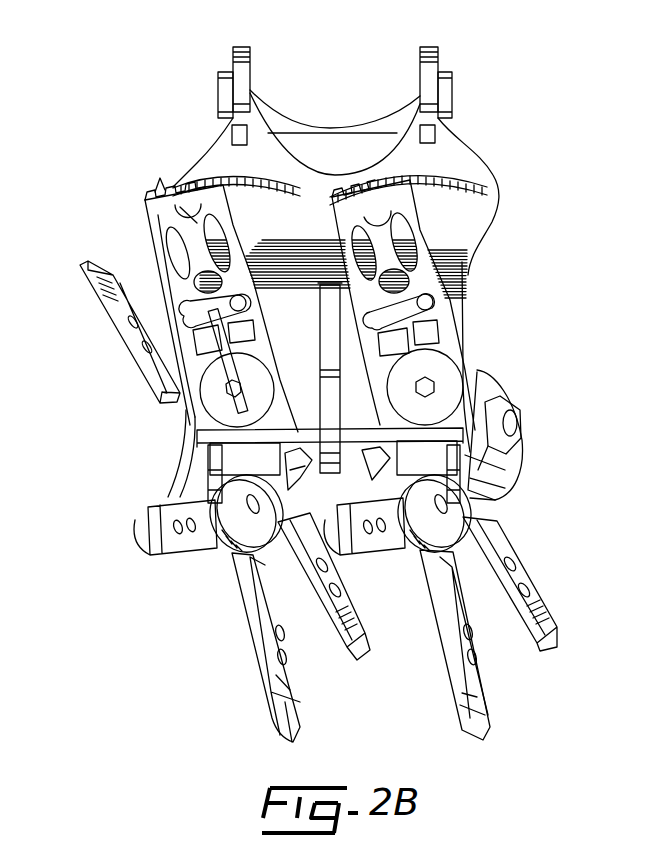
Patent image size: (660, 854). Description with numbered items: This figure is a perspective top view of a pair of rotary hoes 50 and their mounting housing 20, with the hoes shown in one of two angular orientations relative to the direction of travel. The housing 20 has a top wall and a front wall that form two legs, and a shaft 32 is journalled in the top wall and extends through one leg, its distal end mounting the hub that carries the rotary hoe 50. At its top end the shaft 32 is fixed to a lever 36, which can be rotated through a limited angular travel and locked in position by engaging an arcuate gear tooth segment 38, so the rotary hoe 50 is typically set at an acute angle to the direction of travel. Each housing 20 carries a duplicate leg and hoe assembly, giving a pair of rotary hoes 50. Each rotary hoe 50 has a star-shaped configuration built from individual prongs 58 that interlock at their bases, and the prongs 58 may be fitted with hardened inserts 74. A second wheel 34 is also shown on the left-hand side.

The housing 20 is at (468, 263).
The shaft 32 is at (428, 385).
The adjustment wheel 34 is at (233, 392).
The lever 36 is at (163, 273).
The arcuate gear tooth segment 38 is at (223, 180).
The rotary hoe 50 is at (236, 603).
The prongs 58 is at (268, 713).
The hardened inserts 74 is at (520, 575).